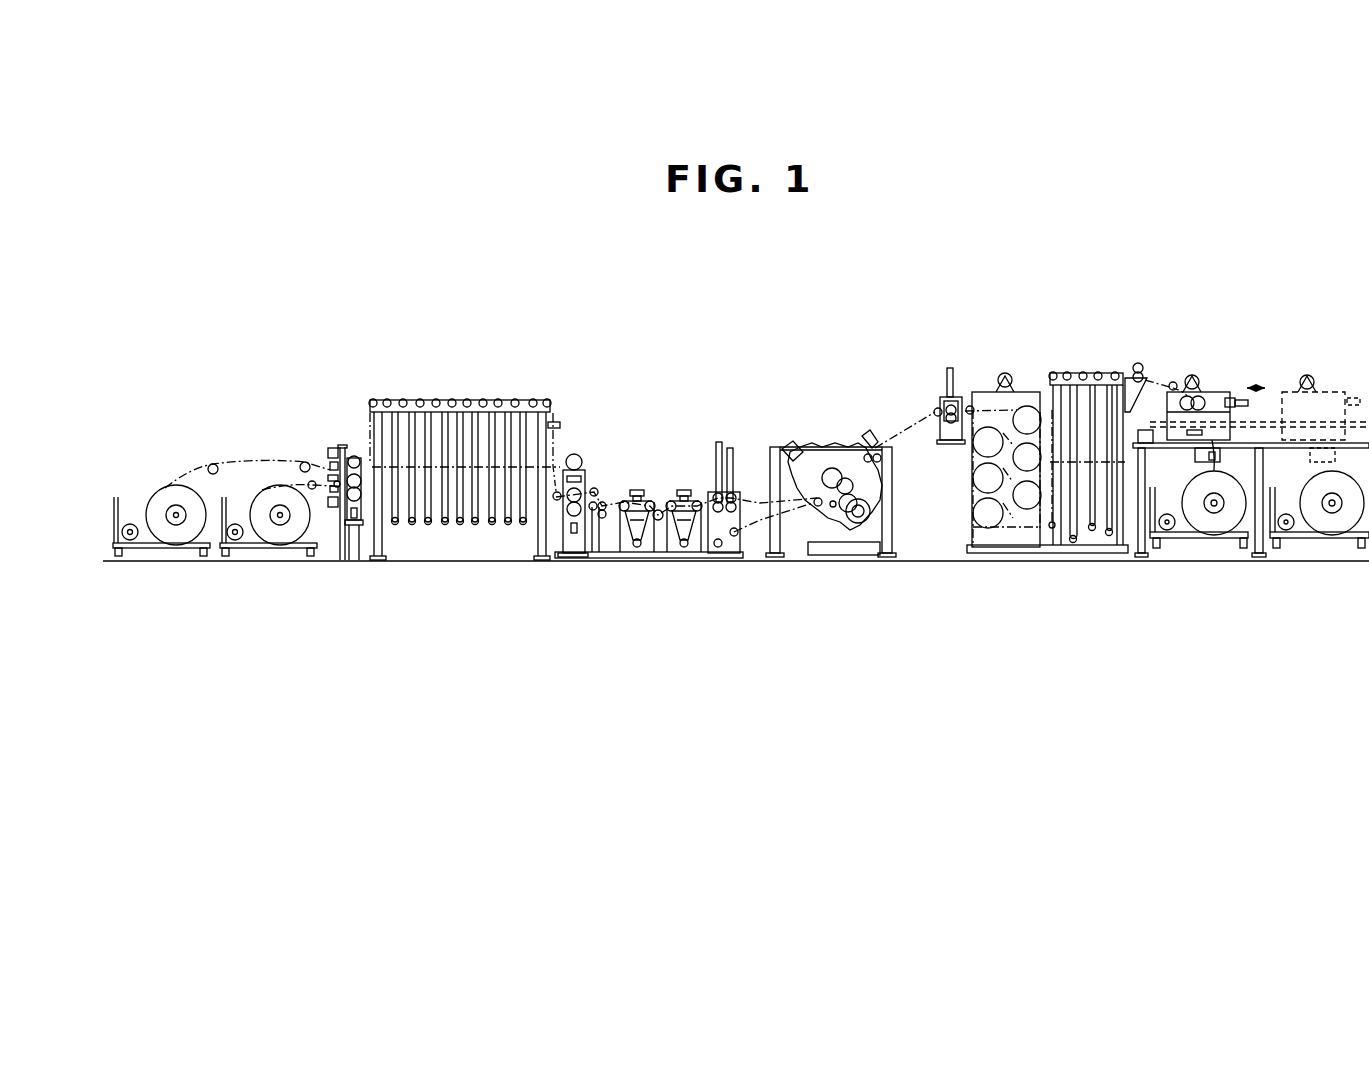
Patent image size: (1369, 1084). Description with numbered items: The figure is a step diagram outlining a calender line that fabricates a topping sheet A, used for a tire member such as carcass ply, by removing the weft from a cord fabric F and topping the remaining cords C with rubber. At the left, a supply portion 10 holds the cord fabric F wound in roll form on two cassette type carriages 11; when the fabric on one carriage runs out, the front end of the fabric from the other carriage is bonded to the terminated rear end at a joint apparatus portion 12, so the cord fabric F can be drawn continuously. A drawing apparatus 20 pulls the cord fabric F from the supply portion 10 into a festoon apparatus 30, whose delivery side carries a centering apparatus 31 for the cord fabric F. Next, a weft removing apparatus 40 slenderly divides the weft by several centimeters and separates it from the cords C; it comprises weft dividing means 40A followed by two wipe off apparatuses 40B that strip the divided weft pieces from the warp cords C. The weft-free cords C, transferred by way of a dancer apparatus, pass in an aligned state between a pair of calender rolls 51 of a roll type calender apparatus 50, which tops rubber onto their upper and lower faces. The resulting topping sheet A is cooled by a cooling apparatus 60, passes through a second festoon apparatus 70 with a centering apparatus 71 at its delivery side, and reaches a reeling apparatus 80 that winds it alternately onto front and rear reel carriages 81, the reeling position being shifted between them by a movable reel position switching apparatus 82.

The supply portion 10 is at (224, 537).
The cassette type carriage 11 is at (160, 567).
The joint apparatus portion 12 is at (330, 438).
The drawing apparatus 20 is at (322, 450).
The festoon apparatus 30 is at (478, 388).
The centering apparatus 31 is at (560, 440).
The weft removing apparatus 40 is at (686, 540).
The weft dividing means 40A is at (603, 525).
The wipe off apparatus 40B is at (677, 483).
The roll type calender apparatus 50 is at (831, 488).
The calender roll 51 is at (832, 476).
The cooling apparatus 60 is at (1005, 378).
The festoon apparatus 70 is at (1113, 410).
The centering apparatus 71 is at (1140, 365).
The reeling apparatus 80 is at (1251, 482).
The reel carriage 81 is at (1200, 533).
The reel position switching apparatus 82 is at (1212, 392).
The cord fabric F is at (172, 490).
The topping sheet A is at (912, 418).
The cord C is at (755, 505).